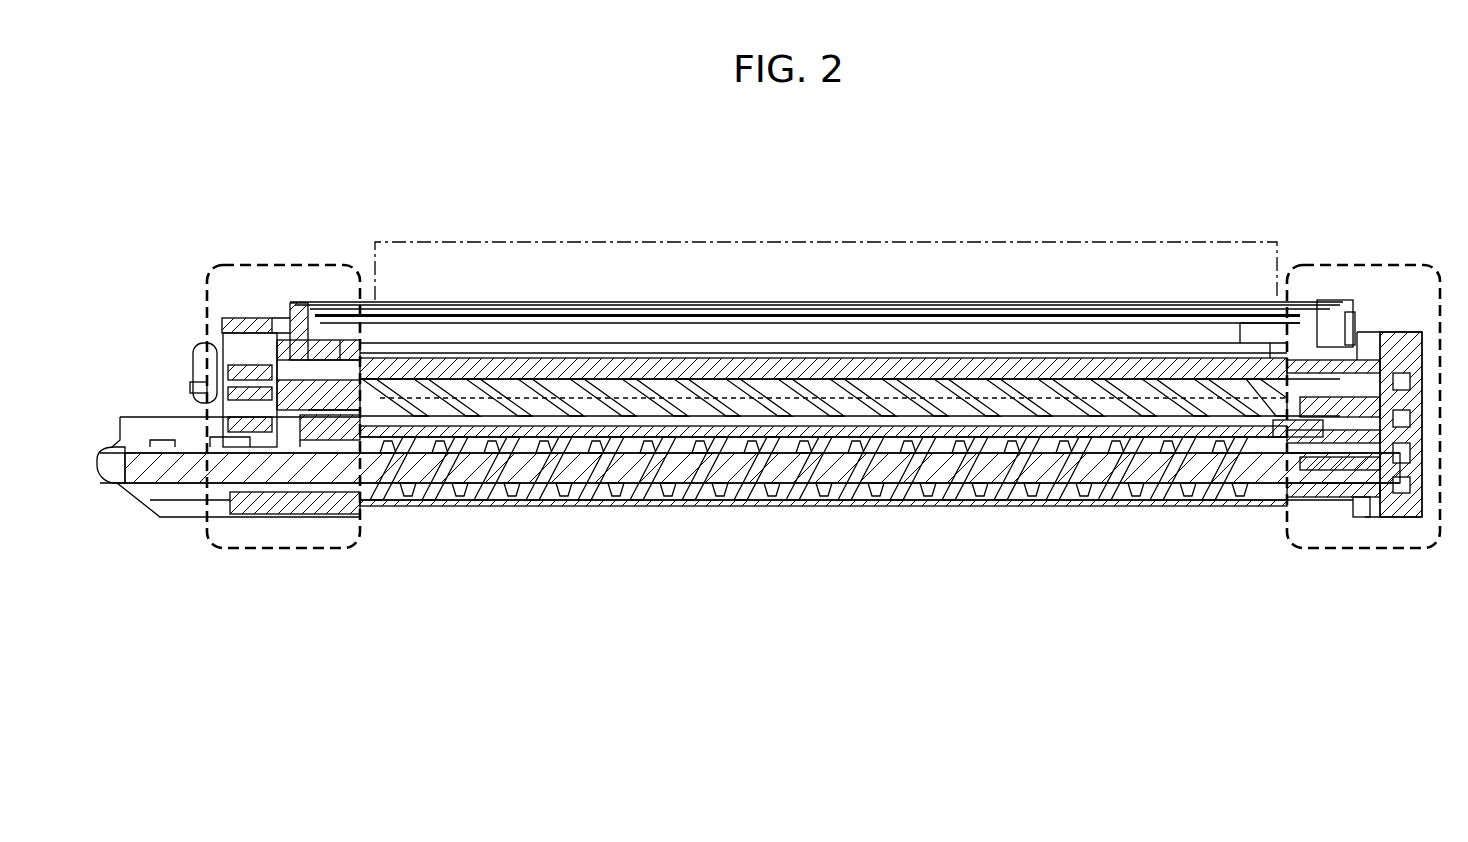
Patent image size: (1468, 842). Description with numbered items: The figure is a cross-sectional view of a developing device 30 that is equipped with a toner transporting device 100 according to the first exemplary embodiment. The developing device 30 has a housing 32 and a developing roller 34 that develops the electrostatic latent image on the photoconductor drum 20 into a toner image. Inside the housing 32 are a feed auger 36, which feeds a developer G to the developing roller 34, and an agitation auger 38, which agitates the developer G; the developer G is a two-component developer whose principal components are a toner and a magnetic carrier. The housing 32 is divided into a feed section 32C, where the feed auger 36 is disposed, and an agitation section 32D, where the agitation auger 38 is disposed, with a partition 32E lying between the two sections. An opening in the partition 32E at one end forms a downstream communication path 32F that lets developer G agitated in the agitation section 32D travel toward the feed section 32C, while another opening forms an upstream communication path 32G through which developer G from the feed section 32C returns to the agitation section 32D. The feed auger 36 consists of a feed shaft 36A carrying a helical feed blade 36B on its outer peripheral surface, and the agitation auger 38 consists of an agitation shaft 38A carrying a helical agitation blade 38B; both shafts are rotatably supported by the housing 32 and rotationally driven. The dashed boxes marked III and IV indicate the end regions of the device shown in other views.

The developing device 30 is at (1190, 110).
The photoconductor drum 20 is at (1160, 268).
The housing 32 is at (1350, 304).
The feed section 32C is at (997, 358).
The agitation section 32D is at (1008, 490).
The partition 32E is at (770, 440).
The downstream communication path 32F is at (1308, 455).
The upstream communication path 32G is at (347, 450).
The developing roller 34 is at (887, 330).
The feed auger 36 is at (692, 185).
The feed shaft 36A is at (560, 382).
The helical feed blade 36B is at (652, 382).
The agitation auger 38 is at (582, 600).
The agitation shaft 38A is at (598, 505).
The helical agitation blade 38B is at (640, 505).
The toner transporting device 100 is at (1262, 360).
The developer G is at (400, 372).
The section line III is at (1406, 262).
The section line IV is at (222, 262).